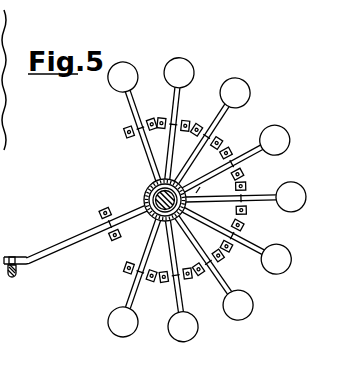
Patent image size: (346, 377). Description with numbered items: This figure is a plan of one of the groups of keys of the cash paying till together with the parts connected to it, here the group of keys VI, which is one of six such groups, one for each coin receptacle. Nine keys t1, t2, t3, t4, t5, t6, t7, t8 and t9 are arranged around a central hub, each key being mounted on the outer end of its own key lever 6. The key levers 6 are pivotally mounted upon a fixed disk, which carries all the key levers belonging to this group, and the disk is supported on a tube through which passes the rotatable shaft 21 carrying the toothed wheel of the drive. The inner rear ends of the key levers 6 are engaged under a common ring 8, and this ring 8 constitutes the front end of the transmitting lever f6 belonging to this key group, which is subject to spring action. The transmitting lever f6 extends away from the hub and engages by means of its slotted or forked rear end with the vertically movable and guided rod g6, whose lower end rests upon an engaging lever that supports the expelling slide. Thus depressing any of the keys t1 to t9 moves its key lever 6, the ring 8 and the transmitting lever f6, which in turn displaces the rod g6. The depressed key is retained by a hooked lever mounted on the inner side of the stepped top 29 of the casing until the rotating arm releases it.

The key t1 is at (127, 73).
The key t2 is at (182, 70).
The key t3 is at (236, 86).
The key t4 is at (277, 132).
The key t5 is at (293, 190).
The key t6 is at (283, 254).
The key t7 is at (248, 305).
The key t8 is at (190, 322).
The key t9 is at (112, 316).
The key lever 6 is at (175, 99).
The shaft 21 is at (152, 184).
The top of the casing 29 is at (143, 195).
The ring 8 is at (120, 226).
The transmitting lever f6 is at (58, 262).
The rod g6 is at (18, 279).
The group of keys VI is at (207, 186).